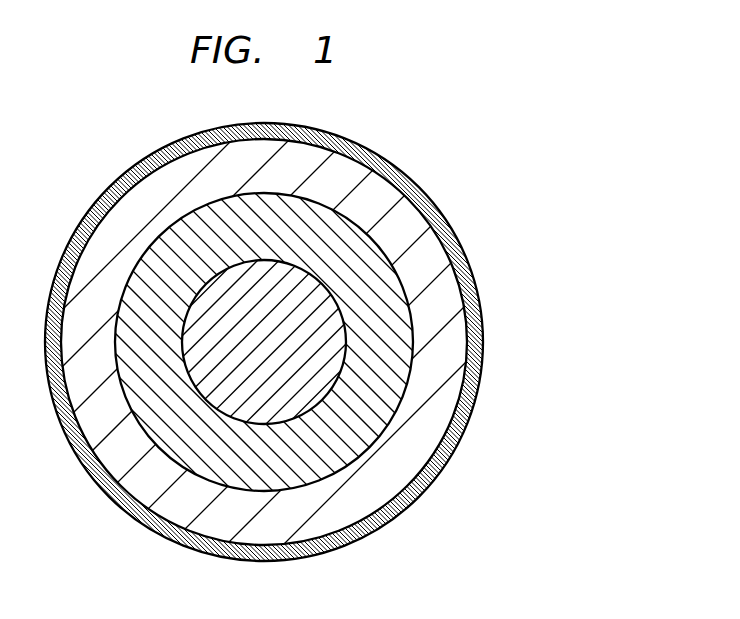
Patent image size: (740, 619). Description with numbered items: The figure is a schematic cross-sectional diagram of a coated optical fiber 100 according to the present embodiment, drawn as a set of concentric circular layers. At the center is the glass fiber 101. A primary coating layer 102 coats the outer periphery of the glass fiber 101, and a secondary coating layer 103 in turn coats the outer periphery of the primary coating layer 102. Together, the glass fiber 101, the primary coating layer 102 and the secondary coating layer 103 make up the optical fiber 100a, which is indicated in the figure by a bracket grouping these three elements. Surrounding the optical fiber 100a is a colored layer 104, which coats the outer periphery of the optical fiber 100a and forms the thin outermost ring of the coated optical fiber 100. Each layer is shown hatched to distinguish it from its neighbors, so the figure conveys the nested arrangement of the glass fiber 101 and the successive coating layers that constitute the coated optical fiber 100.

The coated optical fiber 100 is at (78, 137).
The optical fiber 100a is at (370, 309).
The glass fiber 101 is at (327, 363).
The primary coating layer 102 is at (395, 323).
The secondary coating layer 103 is at (445, 275).
The colored layer 104 is at (407, 183).